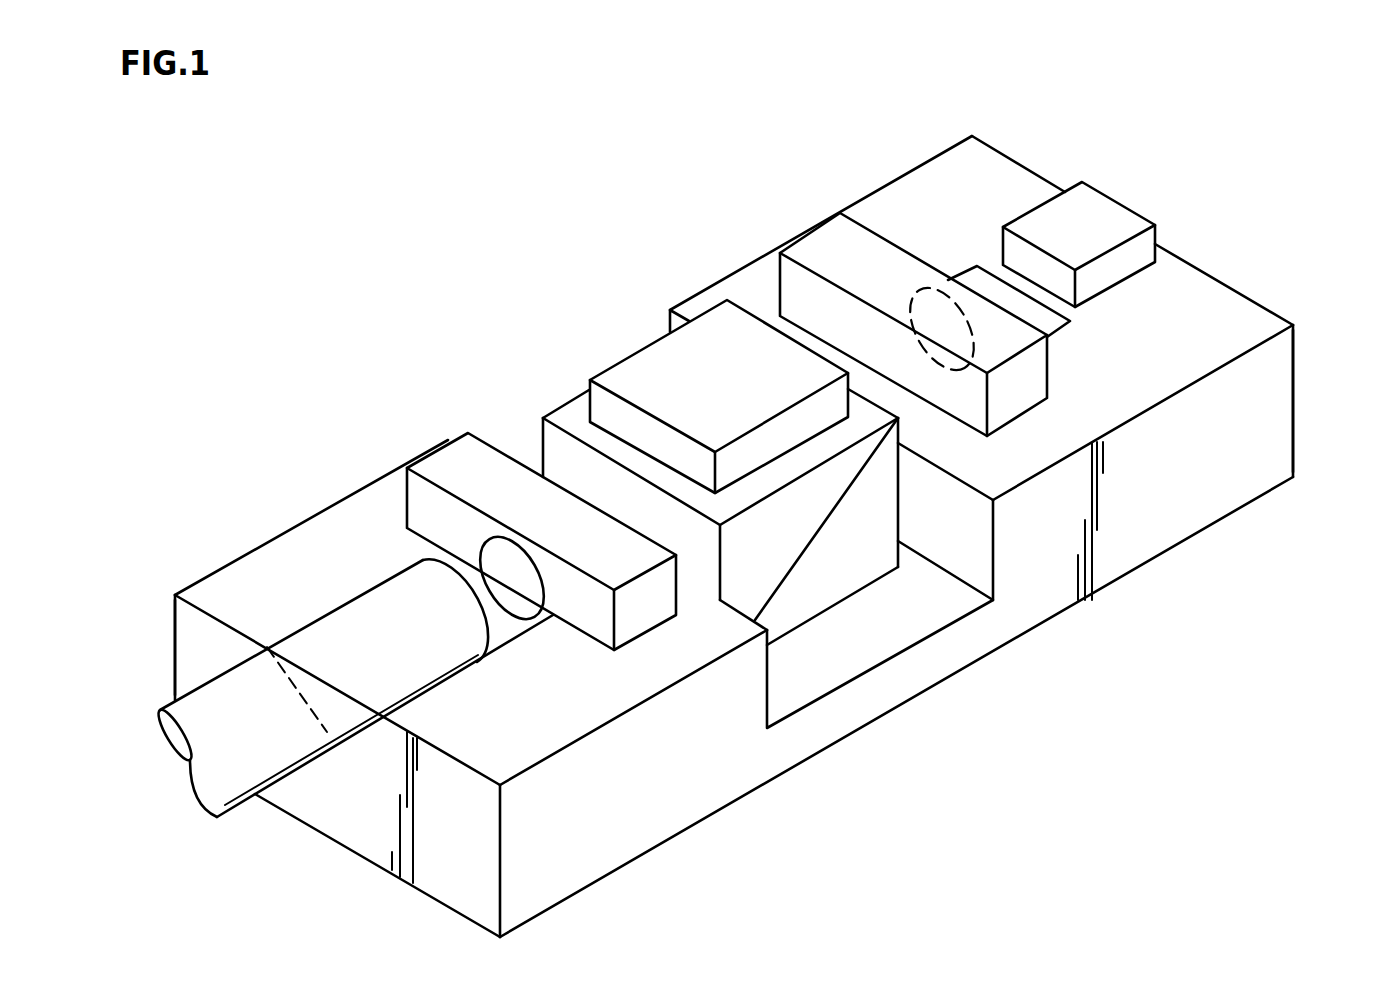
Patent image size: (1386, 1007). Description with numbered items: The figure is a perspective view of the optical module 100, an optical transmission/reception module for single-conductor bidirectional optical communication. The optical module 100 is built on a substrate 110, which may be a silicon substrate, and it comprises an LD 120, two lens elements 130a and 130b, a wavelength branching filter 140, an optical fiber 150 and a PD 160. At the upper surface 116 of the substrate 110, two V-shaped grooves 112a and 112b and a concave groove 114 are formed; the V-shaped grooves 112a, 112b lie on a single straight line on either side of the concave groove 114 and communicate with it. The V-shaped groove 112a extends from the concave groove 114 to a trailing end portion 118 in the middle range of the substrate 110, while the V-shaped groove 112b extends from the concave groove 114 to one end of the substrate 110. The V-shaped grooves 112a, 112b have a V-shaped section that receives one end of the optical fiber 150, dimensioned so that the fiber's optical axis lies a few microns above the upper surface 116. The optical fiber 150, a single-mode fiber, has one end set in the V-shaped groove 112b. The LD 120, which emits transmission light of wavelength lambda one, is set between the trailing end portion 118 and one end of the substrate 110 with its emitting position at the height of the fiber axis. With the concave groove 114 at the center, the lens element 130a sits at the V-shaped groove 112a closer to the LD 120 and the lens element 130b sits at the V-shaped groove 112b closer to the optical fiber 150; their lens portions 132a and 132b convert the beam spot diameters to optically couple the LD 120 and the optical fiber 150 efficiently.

The optical module 100 is at (272, 151).
The substrate 110 is at (1213, 268).
The V-shaped groove 112a is at (1043, 322).
The V-shaped groove 112b is at (523, 637).
The concave groove 114 is at (825, 673).
The upper surface 116 is at (272, 553).
The trailing end portion 118 is at (993, 307).
The LD 120 is at (1122, 200).
The lens element 130a is at (911, 275).
The lens element 130b is at (489, 513).
The lens portion 132a is at (935, 303).
The lens portion 132b is at (493, 555).
The wavelength branching filter 140 is at (567, 398).
The optical fiber 150 is at (240, 807).
The PD 160 is at (660, 332).